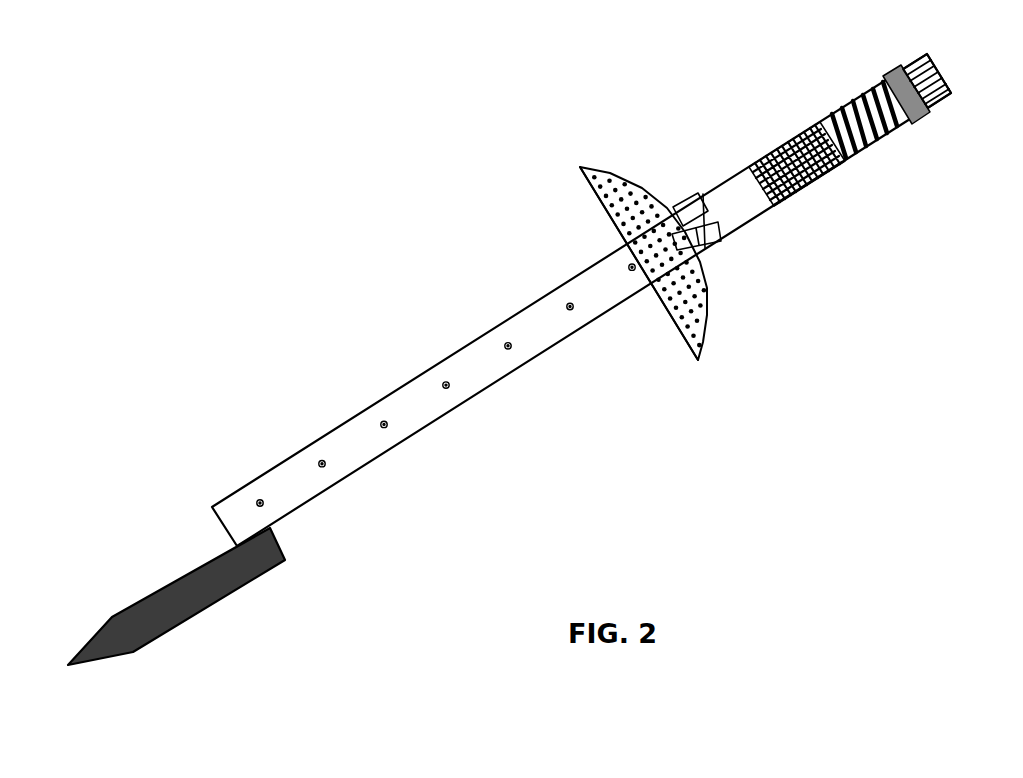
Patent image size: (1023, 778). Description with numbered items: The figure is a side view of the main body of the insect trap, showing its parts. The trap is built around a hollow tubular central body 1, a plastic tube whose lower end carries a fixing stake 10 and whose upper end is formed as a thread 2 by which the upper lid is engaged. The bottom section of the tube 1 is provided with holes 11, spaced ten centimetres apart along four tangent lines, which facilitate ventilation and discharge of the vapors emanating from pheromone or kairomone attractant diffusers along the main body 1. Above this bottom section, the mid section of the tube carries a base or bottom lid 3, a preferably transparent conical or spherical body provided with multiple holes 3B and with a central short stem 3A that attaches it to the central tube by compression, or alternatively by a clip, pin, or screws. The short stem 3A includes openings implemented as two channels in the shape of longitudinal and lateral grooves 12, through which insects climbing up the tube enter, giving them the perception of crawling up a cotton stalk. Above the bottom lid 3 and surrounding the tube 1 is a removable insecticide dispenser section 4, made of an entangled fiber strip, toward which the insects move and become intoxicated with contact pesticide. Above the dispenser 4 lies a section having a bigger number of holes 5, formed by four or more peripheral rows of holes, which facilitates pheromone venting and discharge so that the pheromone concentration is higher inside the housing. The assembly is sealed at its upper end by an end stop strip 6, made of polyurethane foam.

The hollow tubular central body 1 is at (353, 440).
The thread 2 is at (943, 98).
The base or bottom lid 3 is at (704, 350).
The central short stem 3A is at (685, 205).
The holes 3B is at (578, 166).
The insecticide dispenser section 4 is at (772, 148).
The section having a bigger number of holes 5 is at (916, 131).
The end stop strip 6 is at (893, 76).
The fixing stake 10 is at (243, 587).
The holes 11 is at (437, 383).
The longitudinal and lateral grooves 12 is at (720, 243).